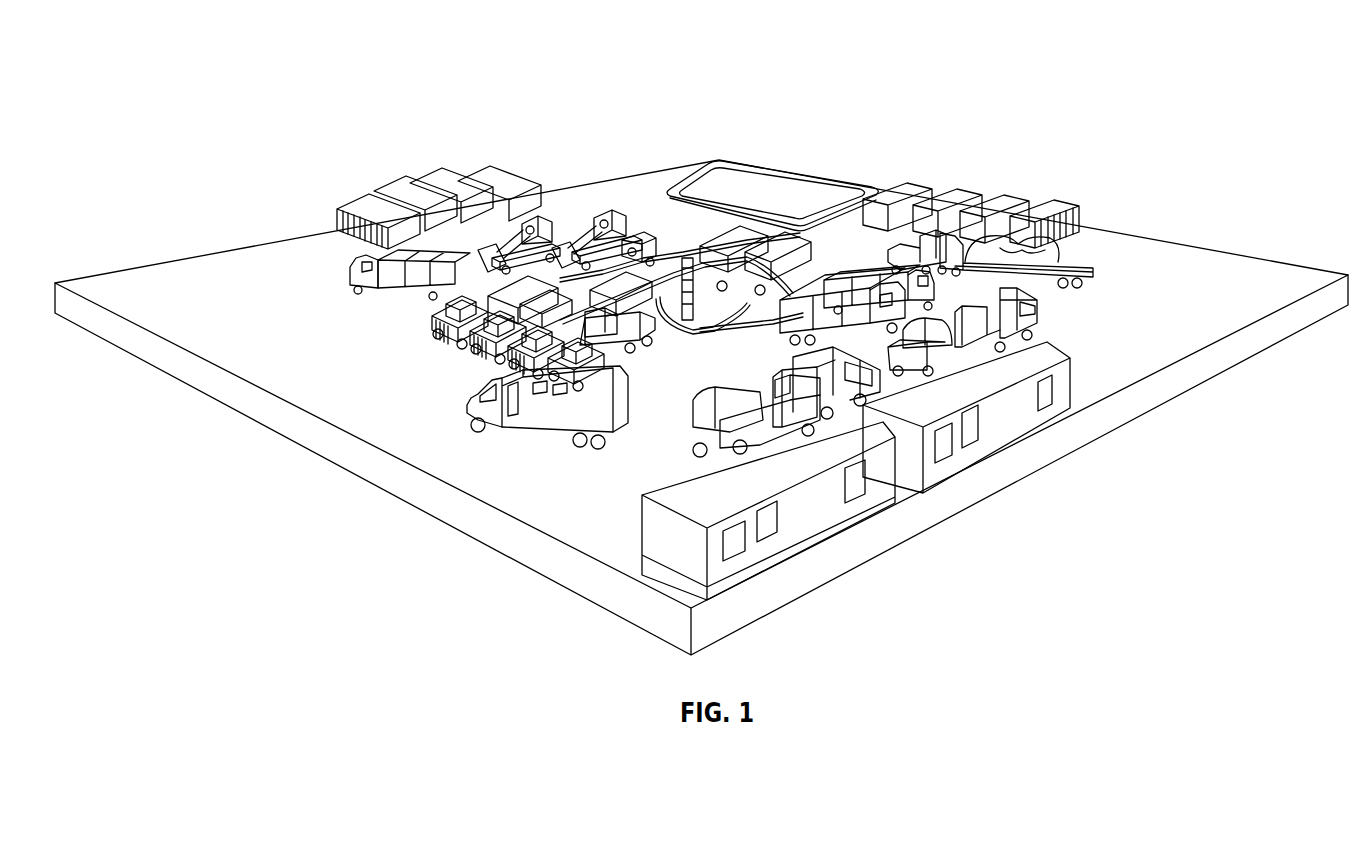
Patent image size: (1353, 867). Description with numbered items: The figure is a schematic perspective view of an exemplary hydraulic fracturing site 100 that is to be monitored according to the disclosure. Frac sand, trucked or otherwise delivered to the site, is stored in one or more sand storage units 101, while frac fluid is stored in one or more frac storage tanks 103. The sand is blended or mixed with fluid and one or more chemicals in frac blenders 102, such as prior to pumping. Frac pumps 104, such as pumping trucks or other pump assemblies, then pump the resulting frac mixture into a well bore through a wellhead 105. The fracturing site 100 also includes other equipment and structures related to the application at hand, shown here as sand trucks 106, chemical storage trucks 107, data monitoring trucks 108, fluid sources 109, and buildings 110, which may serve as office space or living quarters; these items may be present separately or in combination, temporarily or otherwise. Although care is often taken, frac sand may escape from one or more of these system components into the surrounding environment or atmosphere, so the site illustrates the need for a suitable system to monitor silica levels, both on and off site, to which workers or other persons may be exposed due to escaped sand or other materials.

The hydraulic fracturing site 100 is at (877, 58).
The sand storage units 101 is at (1063, 212).
The frac blenders 102 is at (603, 212).
The frac storage tanks 103 is at (337, 226).
The frac pumps 104 is at (430, 316).
The wellhead 105 is at (688, 258).
The sand trucks 106 is at (1012, 255).
The chemical storage trucks 107 is at (745, 333).
The data monitoring trucks 108 is at (465, 408).
The fluid sources 109 is at (795, 213).
The buildings 110 is at (820, 513).